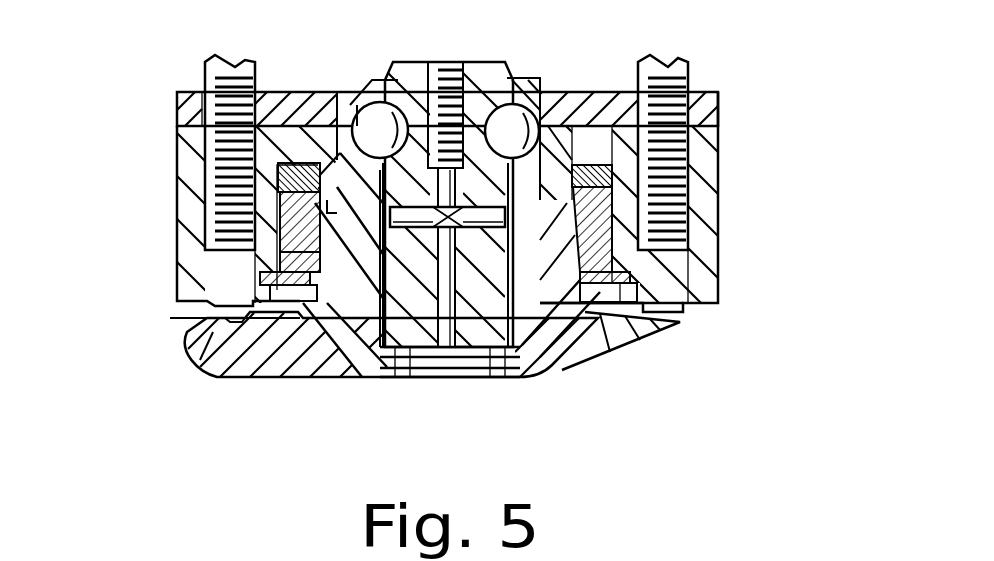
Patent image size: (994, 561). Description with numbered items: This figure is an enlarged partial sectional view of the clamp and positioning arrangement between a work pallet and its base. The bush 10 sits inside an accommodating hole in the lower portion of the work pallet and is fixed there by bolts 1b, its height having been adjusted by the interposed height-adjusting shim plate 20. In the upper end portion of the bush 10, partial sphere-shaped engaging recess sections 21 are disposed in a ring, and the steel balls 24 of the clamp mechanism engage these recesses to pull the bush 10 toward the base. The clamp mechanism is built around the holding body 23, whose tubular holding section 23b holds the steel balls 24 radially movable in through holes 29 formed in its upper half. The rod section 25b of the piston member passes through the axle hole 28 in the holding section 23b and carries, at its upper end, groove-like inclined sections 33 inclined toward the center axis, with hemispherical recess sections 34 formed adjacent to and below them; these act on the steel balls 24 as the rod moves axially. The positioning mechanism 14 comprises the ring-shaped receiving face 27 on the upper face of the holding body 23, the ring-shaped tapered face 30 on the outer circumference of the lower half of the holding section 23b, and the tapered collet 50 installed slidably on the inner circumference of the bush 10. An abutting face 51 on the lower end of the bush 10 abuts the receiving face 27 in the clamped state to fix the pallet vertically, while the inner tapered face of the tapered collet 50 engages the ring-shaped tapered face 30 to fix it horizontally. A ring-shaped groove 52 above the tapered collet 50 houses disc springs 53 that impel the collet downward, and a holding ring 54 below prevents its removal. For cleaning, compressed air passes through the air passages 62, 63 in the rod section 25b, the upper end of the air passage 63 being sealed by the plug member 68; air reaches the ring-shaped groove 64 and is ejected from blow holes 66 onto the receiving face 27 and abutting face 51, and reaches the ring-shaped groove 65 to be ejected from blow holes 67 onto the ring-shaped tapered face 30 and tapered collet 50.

The bolt 1b is at (690, 78).
The bush 10 is at (718, 190).
The positioning mechanism 14 is at (617, 228).
The height-adjusting shim plate 20 is at (177, 107).
The engaging recess section 21 is at (543, 100).
The holding body 23 is at (233, 375).
The holding section 23b is at (603, 340).
The steel ball 24 is at (512, 118).
The rod section 25b is at (478, 372).
The receiving face 27 is at (207, 365).
The axle hole 28 is at (390, 372).
The through hole 29 is at (348, 100).
The ring-shaped tapered face 30 is at (345, 238).
The inclined section 33 is at (363, 100).
The recess section 34 is at (417, 63).
The tapered collet 50 is at (660, 258).
The abutting face 51 is at (187, 323).
The ring-shaped groove 52 is at (343, 192).
The disc spring 53 is at (712, 135).
The holding ring 54 is at (692, 305).
The air passage 62 is at (430, 360).
The air passage 63 is at (441, 370).
The ring-shaped groove 64 is at (510, 383).
The ring-shaped groove 65 is at (343, 112).
The blow hole 66 is at (567, 363).
The blow hole 67 is at (603, 100).
The plug member 68 is at (450, 62).